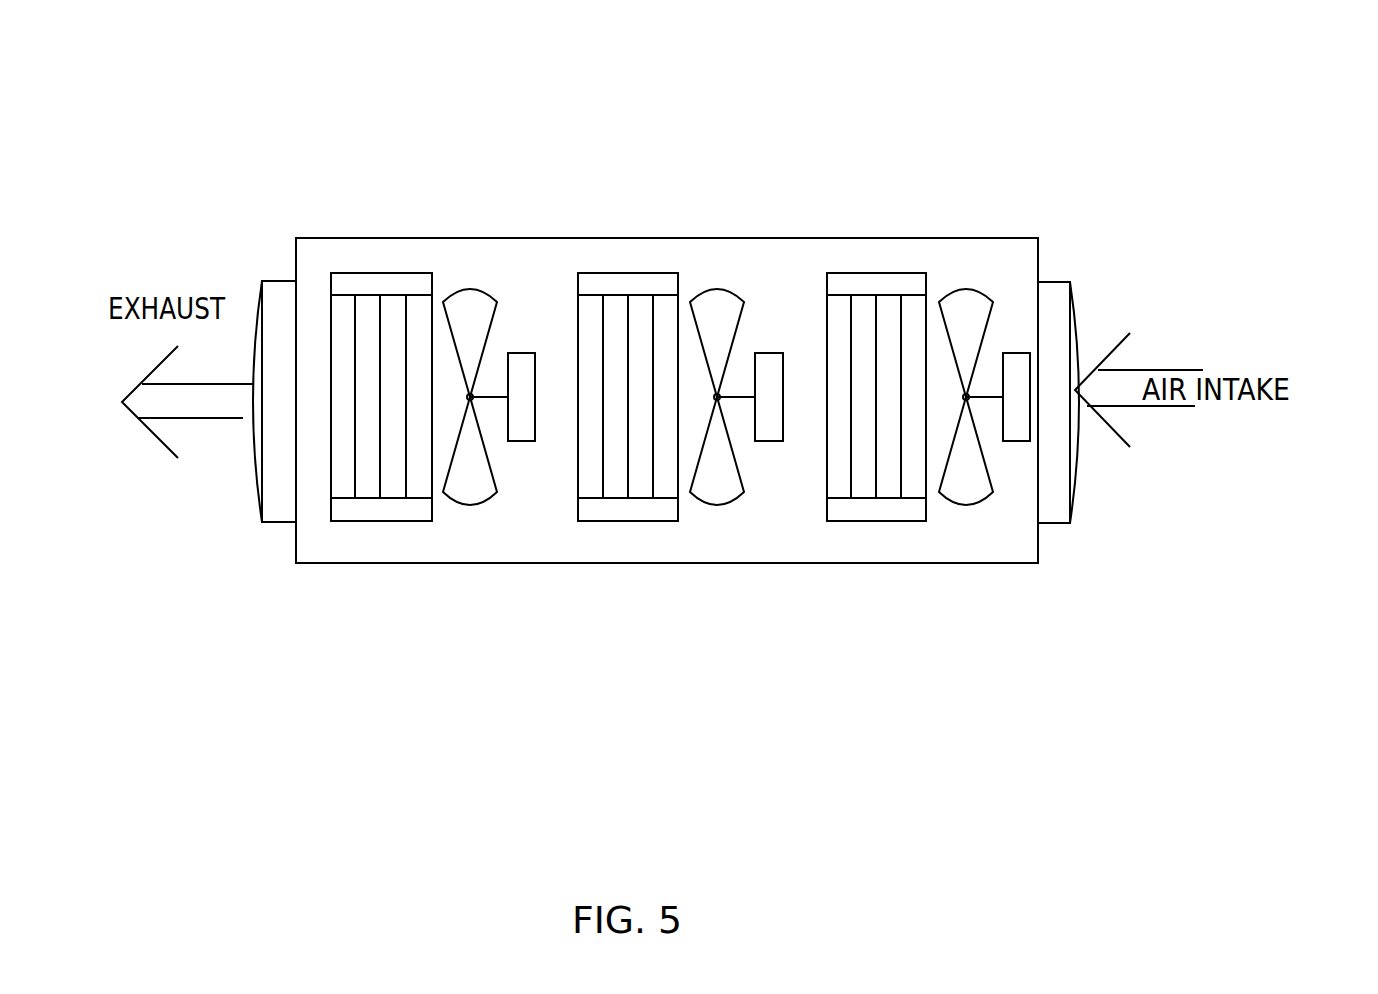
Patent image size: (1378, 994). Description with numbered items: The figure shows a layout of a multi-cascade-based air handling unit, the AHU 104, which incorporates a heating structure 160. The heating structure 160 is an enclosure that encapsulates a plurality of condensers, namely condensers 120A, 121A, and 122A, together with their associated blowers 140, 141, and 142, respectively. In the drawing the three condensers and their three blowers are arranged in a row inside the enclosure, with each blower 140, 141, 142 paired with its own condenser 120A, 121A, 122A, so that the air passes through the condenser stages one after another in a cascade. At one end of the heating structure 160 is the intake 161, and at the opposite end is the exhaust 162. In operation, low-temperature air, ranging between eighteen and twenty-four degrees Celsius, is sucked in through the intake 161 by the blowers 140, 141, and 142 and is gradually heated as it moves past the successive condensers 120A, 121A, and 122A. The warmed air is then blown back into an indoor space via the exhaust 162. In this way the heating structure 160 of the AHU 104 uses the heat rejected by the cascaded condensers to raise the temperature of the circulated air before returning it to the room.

The AHU 104 is at (1253, 88).
The condenser 120A is at (852, 285).
The condenser 121A is at (648, 285).
The condenser 122A is at (400, 285).
The blower 140 is at (1017, 367).
The blower 141 is at (772, 380).
The blower 142 is at (524, 380).
The heating structure 160 is at (970, 238).
The intake 161 is at (1087, 310).
The exhaust 162 is at (250, 293).